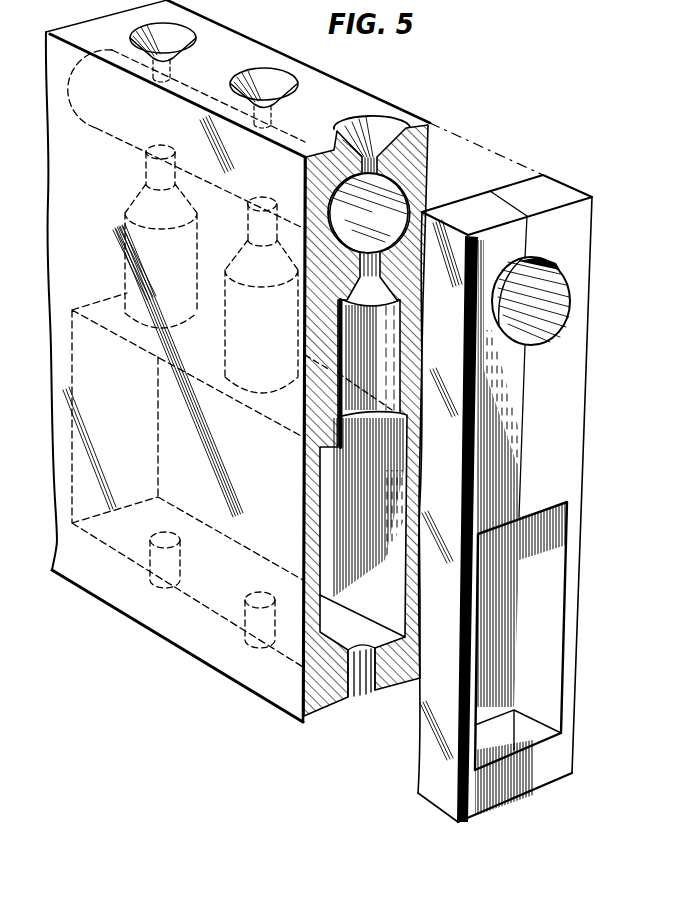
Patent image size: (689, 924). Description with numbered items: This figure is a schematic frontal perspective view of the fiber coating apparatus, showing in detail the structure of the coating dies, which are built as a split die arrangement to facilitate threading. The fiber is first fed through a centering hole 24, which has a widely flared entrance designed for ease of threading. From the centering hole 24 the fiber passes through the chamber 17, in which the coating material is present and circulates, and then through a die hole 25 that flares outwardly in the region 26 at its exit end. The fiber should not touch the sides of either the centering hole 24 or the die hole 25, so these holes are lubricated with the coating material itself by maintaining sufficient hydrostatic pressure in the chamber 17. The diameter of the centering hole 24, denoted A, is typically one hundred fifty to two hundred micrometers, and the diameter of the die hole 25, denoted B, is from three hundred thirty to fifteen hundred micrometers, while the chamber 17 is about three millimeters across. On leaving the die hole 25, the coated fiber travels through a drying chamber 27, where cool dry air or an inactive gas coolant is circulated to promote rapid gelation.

The chamber 17 is at (549, 311).
The centering hole 24 is at (365, 153).
The die hole 25 is at (366, 256).
The region 26 is at (350, 312).
The drying chamber 27 is at (540, 633).
The diameter of centering hole A is at (295, 145).
The diameter of die hole B is at (408, 262).